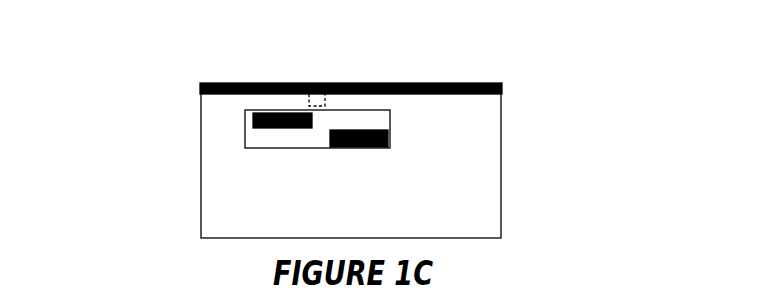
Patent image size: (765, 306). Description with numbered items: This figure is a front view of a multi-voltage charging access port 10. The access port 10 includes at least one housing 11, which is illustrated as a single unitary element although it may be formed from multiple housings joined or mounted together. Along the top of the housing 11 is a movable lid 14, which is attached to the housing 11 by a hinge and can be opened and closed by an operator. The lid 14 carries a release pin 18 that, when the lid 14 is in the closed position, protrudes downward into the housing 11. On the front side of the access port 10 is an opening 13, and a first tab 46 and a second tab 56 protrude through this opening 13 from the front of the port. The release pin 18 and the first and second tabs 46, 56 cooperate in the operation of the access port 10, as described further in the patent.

The multi-voltage charging access port 10 is at (339, 134).
The housing 11 is at (501, 178).
The opening 13 is at (343, 150).
The lid 14 is at (455, 83).
The release pin 18 is at (308, 95).
The first tab 46 is at (286, 130).
The second tab 56 is at (380, 148).